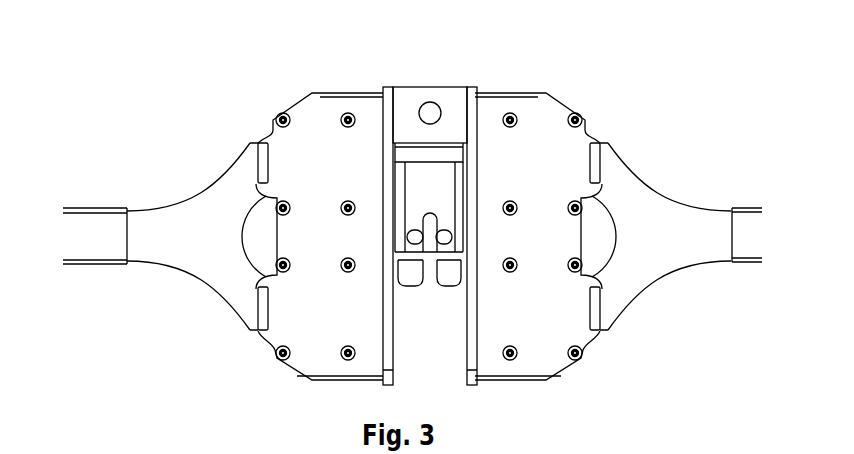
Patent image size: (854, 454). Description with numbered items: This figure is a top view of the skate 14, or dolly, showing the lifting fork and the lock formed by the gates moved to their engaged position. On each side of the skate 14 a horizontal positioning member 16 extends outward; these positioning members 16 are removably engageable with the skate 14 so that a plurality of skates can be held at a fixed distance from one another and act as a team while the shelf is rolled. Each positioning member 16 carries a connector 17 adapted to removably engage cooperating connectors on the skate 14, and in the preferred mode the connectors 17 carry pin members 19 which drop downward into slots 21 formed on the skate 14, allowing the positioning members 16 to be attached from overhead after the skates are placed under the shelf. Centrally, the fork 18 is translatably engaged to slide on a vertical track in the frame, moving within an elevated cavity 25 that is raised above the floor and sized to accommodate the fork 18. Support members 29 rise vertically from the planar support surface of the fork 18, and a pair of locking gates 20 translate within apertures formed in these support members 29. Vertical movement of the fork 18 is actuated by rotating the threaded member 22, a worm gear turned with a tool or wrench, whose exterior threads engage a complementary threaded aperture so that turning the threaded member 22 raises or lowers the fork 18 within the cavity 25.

The skate 14 is at (283, 150).
The horizontal positioning members 16 is at (97, 210).
The connectors 17 is at (185, 227).
The fork 18 is at (439, 193).
The pin members 19 is at (265, 318).
The locking gates 20 is at (417, 237).
The slots 21 is at (263, 142).
The threaded member 22 is at (433, 113).
The elevated cavity 25 is at (428, 334).
The support members 29 is at (398, 170).